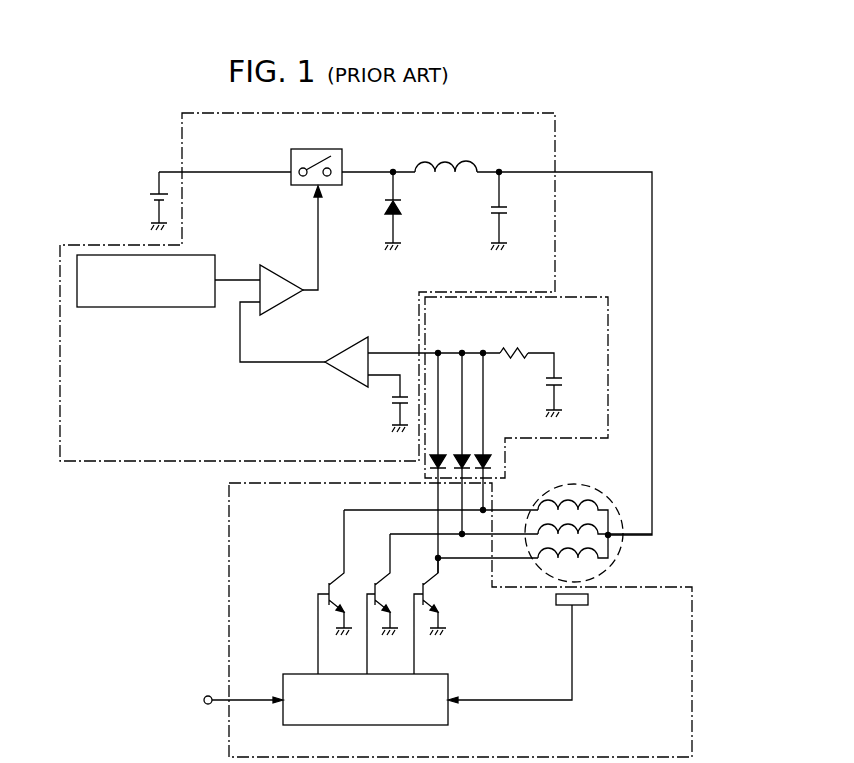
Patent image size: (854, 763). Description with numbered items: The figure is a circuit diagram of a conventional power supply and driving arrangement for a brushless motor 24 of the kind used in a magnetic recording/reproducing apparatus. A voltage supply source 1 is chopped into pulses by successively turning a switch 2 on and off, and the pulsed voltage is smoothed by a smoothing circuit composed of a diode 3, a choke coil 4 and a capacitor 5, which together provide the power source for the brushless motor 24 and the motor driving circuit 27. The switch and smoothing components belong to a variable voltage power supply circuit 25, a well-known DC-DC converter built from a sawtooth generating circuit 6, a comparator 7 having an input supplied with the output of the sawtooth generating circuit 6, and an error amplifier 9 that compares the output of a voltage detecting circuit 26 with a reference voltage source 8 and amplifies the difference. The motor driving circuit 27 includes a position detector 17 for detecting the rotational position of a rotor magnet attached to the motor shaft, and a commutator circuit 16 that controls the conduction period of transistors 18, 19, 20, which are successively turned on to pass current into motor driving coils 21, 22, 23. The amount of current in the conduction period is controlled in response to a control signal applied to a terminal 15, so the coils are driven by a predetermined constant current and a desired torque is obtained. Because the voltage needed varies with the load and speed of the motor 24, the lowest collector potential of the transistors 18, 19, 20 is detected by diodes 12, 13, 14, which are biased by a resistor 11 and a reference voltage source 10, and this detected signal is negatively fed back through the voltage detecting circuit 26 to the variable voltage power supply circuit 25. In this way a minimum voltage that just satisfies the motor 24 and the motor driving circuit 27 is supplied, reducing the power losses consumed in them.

The voltage supply source 1 is at (152, 192).
The switch 2 is at (322, 150).
The diode 3 is at (385, 206).
The choke coil 4 is at (446, 164).
The capacitor 5 is at (491, 210).
The sawtooth generating circuit 6 is at (198, 255).
The comparator 7 is at (290, 275).
The reference voltage source 8 is at (392, 400).
The error amplifier 9 is at (356, 340).
The reference voltage source 10 is at (562, 378).
The resistor 11 is at (511, 348).
The diode 12 is at (430, 462).
The diode 13 is at (468, 457).
The diode 14 is at (492, 462).
The terminal 15 is at (209, 695).
The commutator circuit 16 is at (447, 674).
The position detector 17 is at (589, 598).
The transistor 18 is at (331, 582).
The transistor 19 is at (378, 582).
The transistor 20 is at (426, 582).
The motor driving coil 21 is at (546, 498).
The motor driving coil 22 is at (598, 510).
The motor driving coil 23 is at (600, 566).
The brushless motor 24 is at (588, 485).
The variable voltage power supply circuit 25 is at (556, 148).
The voltage detecting circuit 26 is at (585, 297).
The motor driving circuit 27 is at (693, 677).